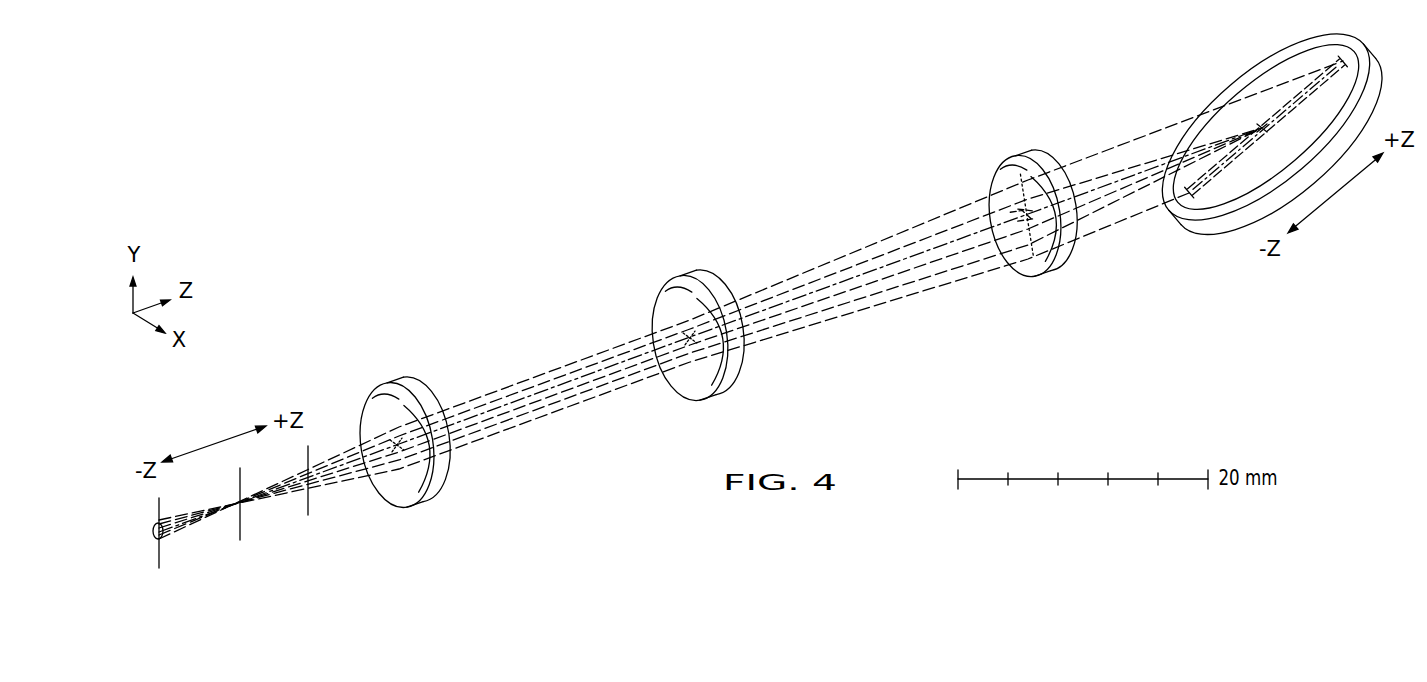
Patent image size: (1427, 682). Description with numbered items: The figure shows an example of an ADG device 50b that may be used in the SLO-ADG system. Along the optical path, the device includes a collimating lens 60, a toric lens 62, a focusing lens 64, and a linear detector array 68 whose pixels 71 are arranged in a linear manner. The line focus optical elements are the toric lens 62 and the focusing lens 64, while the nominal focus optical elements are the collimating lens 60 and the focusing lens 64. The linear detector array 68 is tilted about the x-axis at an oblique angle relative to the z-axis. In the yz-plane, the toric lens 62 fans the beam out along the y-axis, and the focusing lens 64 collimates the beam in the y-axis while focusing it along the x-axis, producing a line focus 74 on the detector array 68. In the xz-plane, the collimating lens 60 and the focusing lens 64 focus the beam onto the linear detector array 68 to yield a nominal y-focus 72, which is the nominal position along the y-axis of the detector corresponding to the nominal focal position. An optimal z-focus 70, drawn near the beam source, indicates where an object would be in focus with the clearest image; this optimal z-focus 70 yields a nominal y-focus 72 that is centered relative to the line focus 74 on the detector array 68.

The ADG device 50b is at (367, 124).
The collimating lens 60 is at (394, 383).
The toric lens 62 is at (688, 278).
The focusing lens 64 is at (1016, 153).
The linear detector array 68 is at (1172, 224).
The optimal z-focus 70 is at (243, 521).
The pixels 71 is at (1293, 102).
The nominal y-focus 72 is at (1253, 130).
The line focus 74 is at (1226, 178).